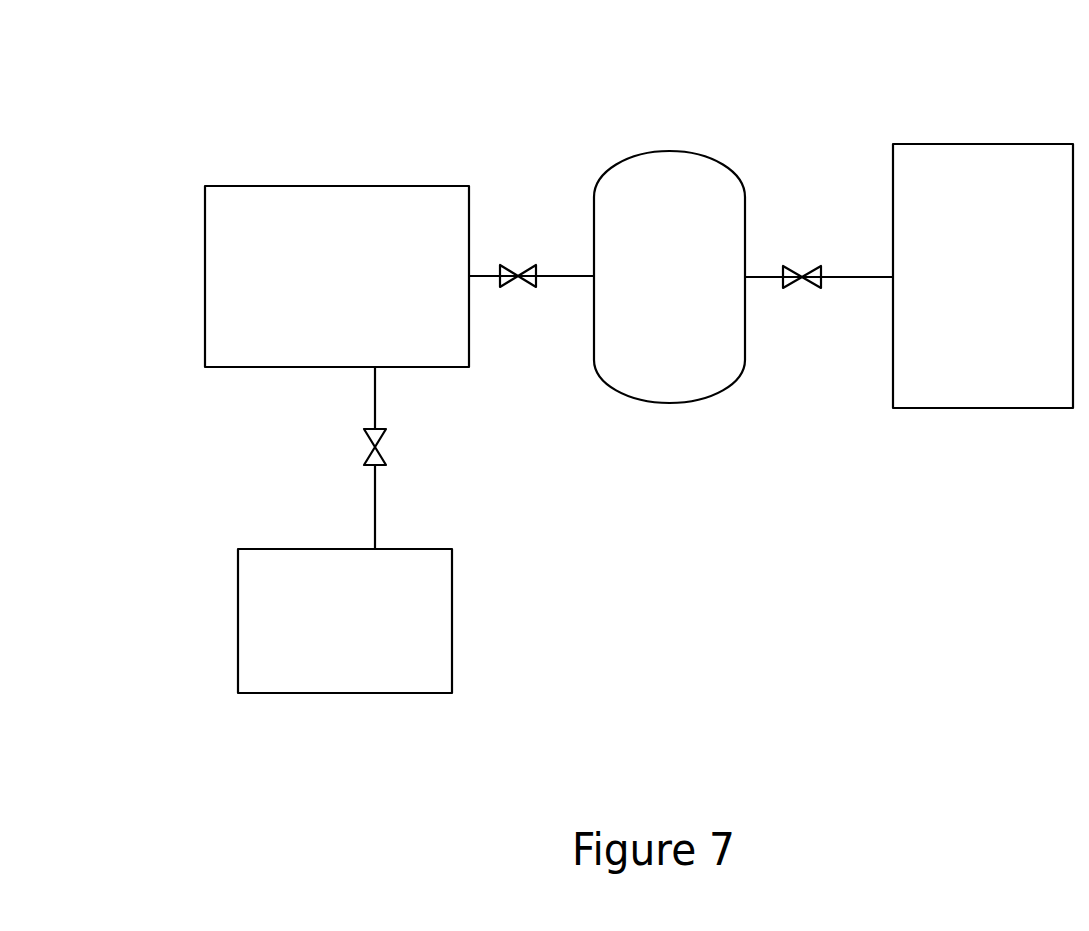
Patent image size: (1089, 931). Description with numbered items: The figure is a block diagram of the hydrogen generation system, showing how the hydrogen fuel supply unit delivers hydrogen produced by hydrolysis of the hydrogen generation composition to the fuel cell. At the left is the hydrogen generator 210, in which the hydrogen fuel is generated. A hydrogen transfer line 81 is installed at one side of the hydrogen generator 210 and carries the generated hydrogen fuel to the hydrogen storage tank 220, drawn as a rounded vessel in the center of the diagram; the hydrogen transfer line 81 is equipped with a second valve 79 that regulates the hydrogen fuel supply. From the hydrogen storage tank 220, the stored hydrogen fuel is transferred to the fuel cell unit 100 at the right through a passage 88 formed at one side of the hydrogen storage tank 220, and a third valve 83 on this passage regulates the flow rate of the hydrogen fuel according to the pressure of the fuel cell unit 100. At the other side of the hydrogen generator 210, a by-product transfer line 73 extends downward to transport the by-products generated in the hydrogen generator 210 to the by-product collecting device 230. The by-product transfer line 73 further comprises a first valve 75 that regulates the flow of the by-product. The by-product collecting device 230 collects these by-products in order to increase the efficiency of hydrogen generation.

The hydrogen generator 210 is at (204, 292).
The second valve 79 is at (530, 263).
The hydrogen transfer line 81 is at (563, 279).
The hydrogen storage tank 220 is at (670, 151).
The third valve 83 is at (811, 264).
The passage 88 is at (857, 279).
The fuel cell unit 100 is at (975, 144).
The first valve 75 is at (363, 445).
The by-product transfer line 73 is at (378, 503).
The by-product collecting device 230 is at (352, 695).